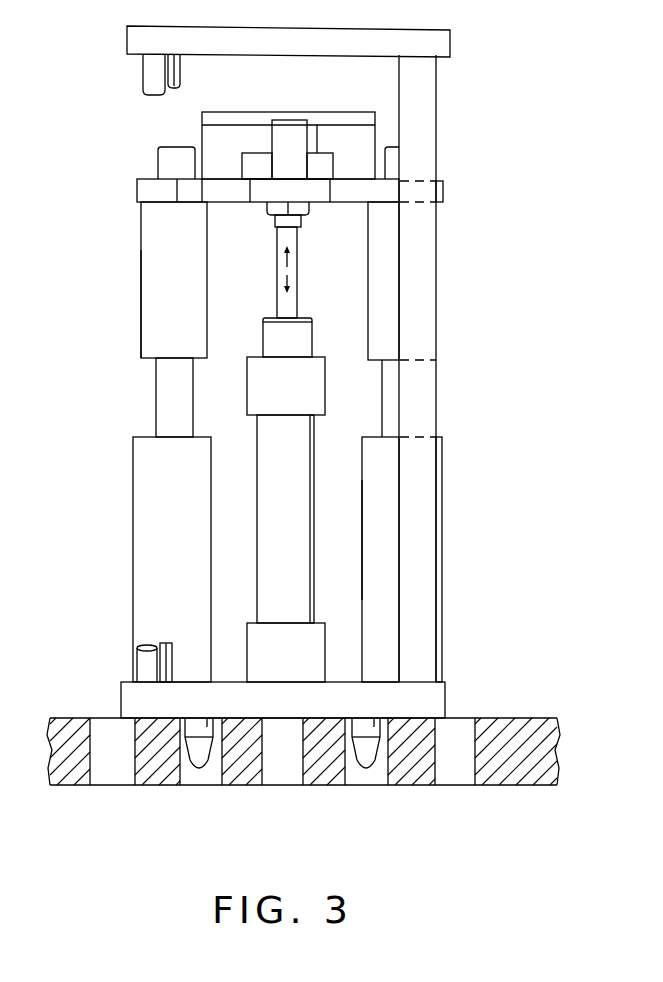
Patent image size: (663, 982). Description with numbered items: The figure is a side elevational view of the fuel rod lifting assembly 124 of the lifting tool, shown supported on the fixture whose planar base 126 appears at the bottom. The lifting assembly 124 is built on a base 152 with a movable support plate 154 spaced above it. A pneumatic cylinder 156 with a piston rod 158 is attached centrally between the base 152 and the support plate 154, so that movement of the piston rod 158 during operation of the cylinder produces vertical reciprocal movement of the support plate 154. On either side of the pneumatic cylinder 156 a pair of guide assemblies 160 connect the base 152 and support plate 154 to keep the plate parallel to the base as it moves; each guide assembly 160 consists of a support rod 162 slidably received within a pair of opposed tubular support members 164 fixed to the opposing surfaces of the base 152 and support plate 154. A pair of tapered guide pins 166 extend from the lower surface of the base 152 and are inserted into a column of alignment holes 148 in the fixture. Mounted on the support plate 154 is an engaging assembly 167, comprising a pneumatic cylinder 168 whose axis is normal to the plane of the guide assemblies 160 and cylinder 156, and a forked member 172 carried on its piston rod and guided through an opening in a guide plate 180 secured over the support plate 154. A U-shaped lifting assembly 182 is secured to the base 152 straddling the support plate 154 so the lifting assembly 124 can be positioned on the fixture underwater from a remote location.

The fuel rod lifting assembly 124 is at (440, 117).
The base 126 is at (486, 718).
The alignment holes 148 is at (120, 770).
The base 152 is at (121, 693).
The movable support plate 154 is at (137, 192).
The pneumatic cylinder 156 is at (307, 333).
The piston rod 158 is at (295, 237).
The guide assemblies 160 is at (137, 333).
The support rod 162 is at (156, 396).
The tubular support members 164 is at (144, 267).
The tapered guide pins 166 is at (201, 772).
The engaging assembly 167 is at (268, 139).
The pneumatic cylinder 168 is at (288, 135).
The forked member 172 is at (322, 160).
The guide plate 180 is at (206, 142).
The U-shaped lifting assembly 182 is at (290, 27).